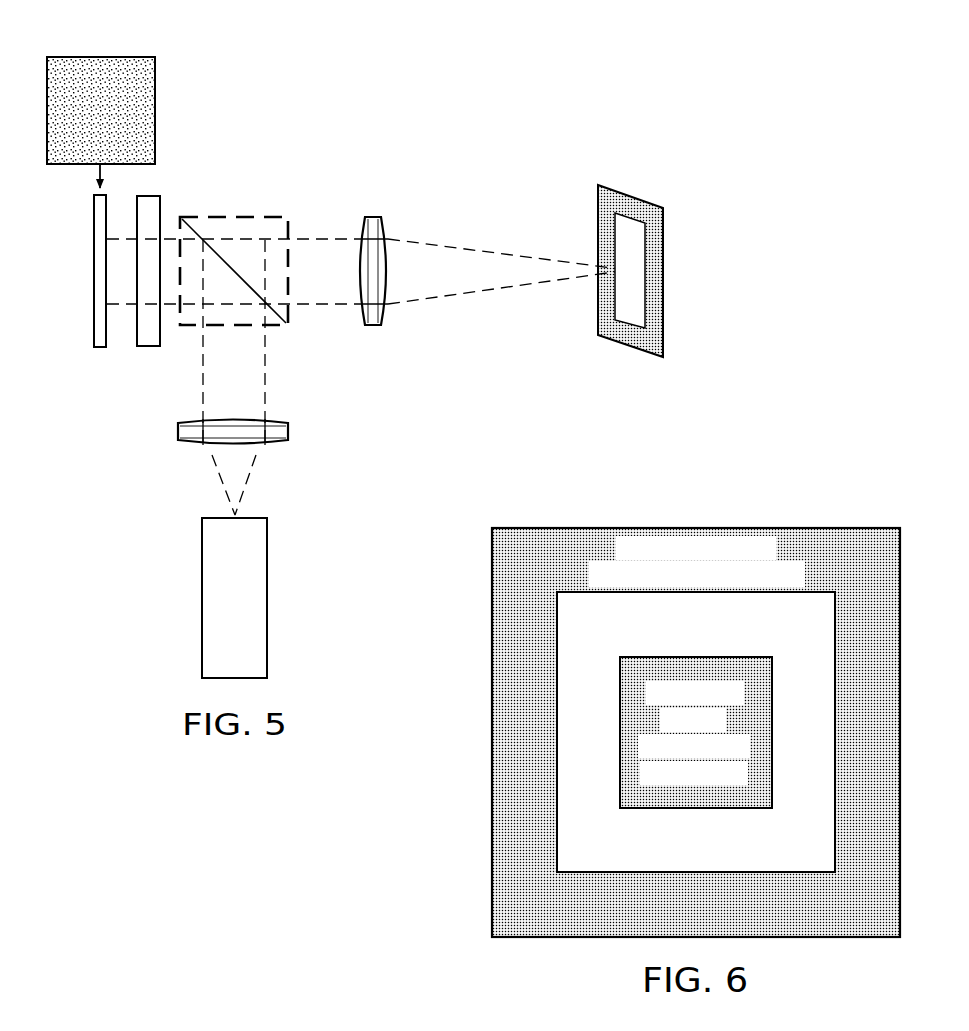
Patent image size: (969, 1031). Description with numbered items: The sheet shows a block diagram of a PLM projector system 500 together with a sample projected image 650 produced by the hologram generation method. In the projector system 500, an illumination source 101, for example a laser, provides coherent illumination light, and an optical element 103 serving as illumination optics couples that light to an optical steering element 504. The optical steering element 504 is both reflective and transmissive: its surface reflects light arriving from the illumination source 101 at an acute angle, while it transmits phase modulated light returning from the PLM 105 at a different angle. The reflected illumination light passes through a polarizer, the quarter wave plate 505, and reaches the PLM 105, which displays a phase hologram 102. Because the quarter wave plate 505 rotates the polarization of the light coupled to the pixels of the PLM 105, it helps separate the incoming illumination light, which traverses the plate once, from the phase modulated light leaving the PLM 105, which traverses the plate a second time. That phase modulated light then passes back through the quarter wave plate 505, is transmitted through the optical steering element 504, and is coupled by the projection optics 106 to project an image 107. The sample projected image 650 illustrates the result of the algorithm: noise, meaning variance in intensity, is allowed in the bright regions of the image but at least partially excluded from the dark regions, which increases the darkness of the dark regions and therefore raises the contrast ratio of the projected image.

In FIG. 5, the PLM projector system 500 is at (452, 96).
In FIG. 5, the phase hologram 102 is at (83, 55).
In FIG. 5, the PLM 105 is at (93, 270).
In FIG. 5, the quarter wave plate 505 is at (148, 349).
In FIG. 5, the optical steering element 504 is at (236, 215).
In FIG. 5, the projection optics 106 is at (375, 214).
In FIG. 5, the image 107 is at (664, 282).
In FIG. 5, the optical element 103 is at (178, 432).
In FIG. 5, the illumination source 101 is at (202, 598).
In FIG. 6, the projected image 650 is at (806, 526).